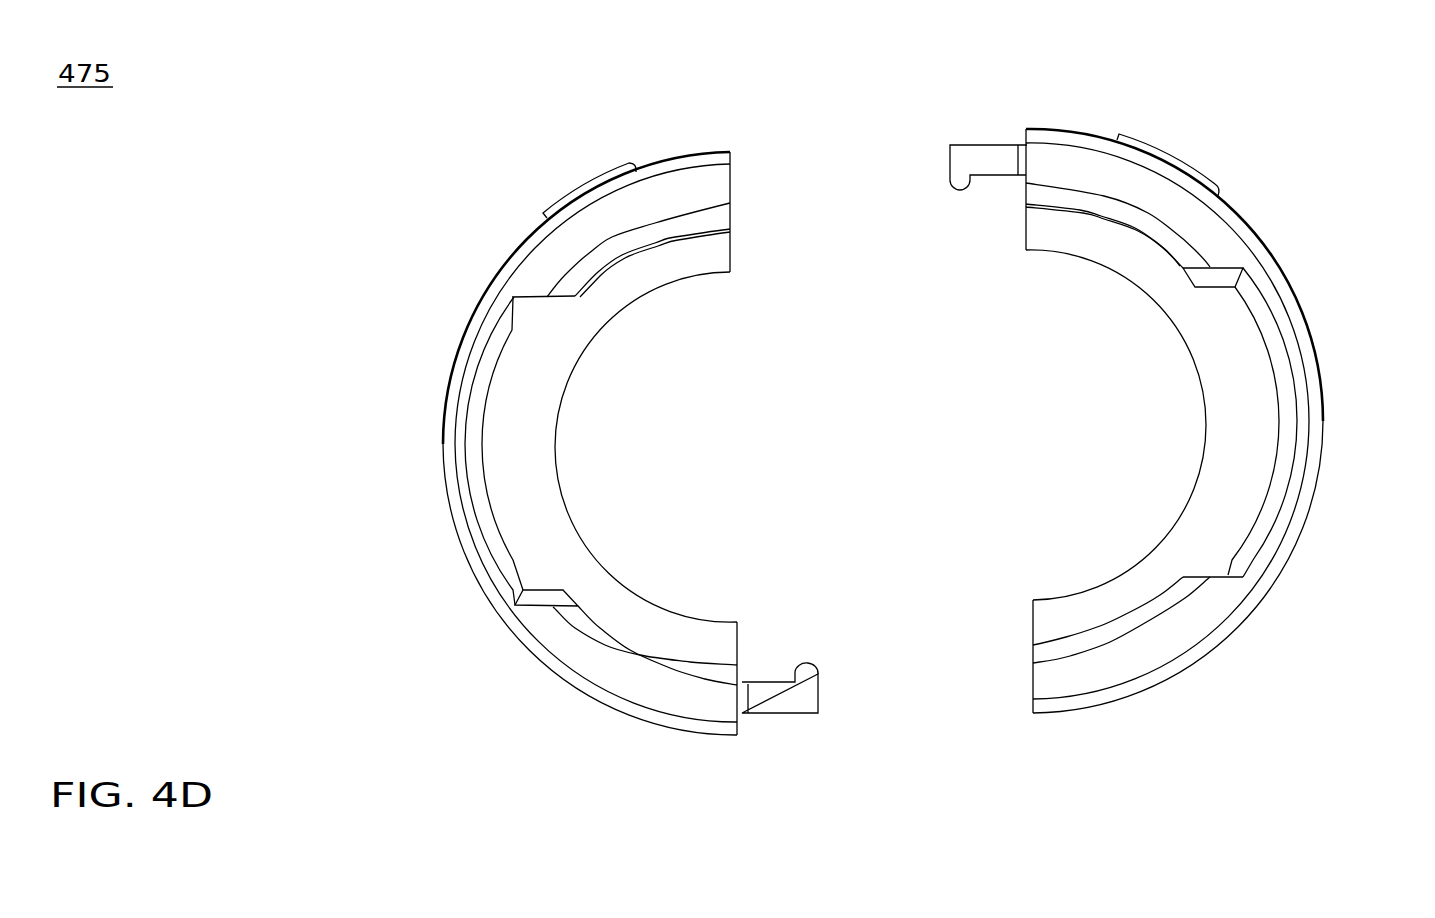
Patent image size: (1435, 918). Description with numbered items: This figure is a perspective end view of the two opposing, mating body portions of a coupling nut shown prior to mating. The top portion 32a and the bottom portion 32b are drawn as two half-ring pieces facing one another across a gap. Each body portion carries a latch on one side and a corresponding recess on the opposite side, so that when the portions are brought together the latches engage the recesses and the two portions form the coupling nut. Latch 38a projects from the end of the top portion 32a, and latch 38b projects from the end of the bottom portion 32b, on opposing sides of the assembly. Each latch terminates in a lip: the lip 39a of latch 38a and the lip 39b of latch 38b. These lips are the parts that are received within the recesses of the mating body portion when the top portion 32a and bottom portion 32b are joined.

The top portion 32a is at (487, 352).
The bottom portion 32b is at (1209, 230).
The latch 38a is at (791, 702).
The latch 38b is at (982, 163).
The lip 39a is at (808, 668).
The lip 39b is at (958, 178).